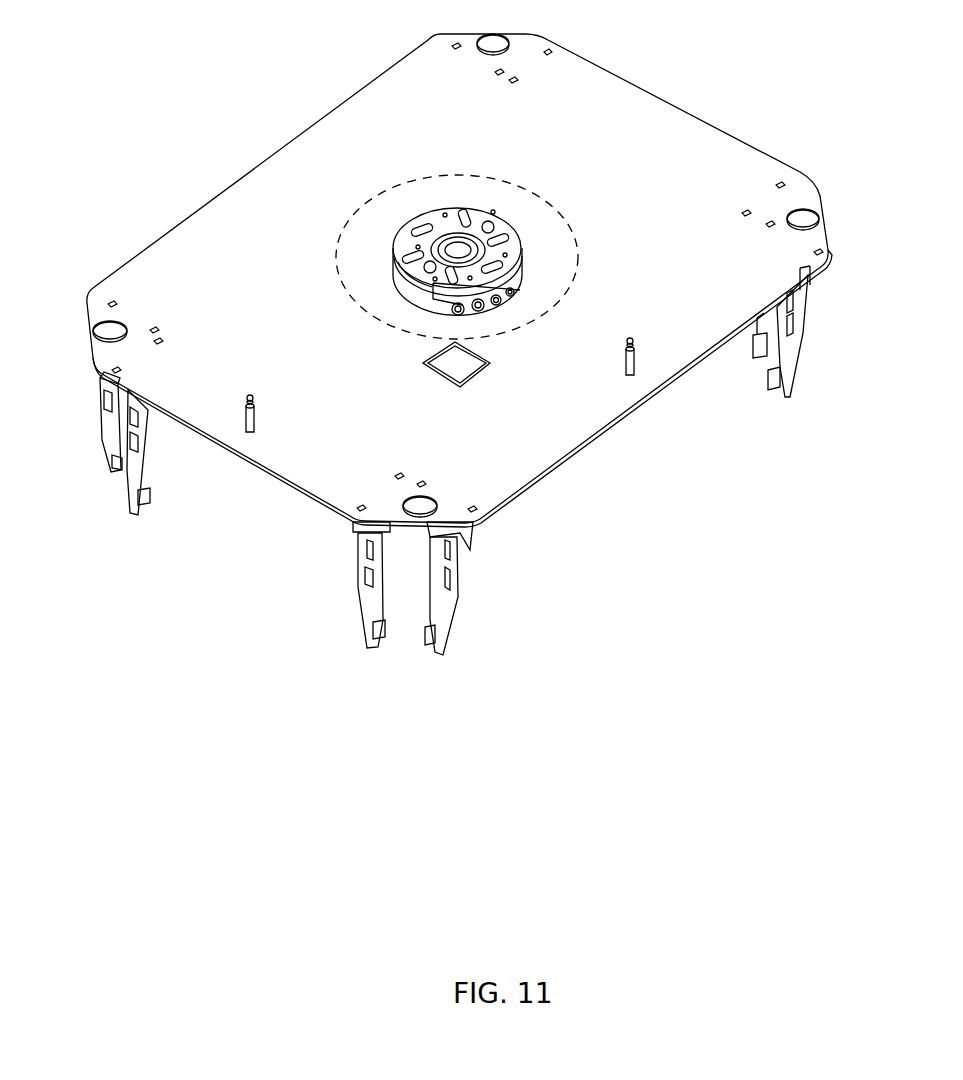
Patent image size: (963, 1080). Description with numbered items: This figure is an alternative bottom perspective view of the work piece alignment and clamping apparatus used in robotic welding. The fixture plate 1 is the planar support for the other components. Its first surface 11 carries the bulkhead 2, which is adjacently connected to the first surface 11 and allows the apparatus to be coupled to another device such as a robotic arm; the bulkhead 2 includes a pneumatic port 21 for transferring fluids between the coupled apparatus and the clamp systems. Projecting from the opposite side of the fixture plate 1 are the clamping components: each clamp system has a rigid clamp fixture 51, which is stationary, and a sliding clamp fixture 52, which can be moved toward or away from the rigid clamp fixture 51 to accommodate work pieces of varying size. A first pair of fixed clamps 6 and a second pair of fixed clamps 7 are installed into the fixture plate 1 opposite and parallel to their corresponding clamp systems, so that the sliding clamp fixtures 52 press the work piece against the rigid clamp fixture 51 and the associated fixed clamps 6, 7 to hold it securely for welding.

The fixture plate 1 is at (847, 123).
The first surface 11 is at (641, 92).
The bulkhead 2 is at (457, 258).
The pneumatic port 21 is at (446, 303).
The first pair of fixed clamps 6 is at (110, 432).
The second pair of fixed clamps 7 is at (756, 335).
The rigid clamp fixture 51 is at (135, 483).
The sliding clamp fixture 52 is at (370, 612).